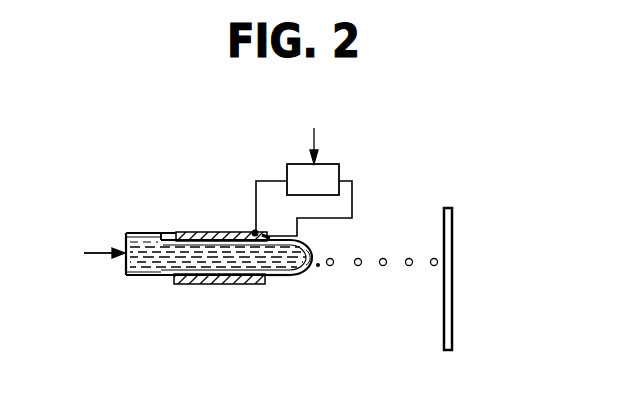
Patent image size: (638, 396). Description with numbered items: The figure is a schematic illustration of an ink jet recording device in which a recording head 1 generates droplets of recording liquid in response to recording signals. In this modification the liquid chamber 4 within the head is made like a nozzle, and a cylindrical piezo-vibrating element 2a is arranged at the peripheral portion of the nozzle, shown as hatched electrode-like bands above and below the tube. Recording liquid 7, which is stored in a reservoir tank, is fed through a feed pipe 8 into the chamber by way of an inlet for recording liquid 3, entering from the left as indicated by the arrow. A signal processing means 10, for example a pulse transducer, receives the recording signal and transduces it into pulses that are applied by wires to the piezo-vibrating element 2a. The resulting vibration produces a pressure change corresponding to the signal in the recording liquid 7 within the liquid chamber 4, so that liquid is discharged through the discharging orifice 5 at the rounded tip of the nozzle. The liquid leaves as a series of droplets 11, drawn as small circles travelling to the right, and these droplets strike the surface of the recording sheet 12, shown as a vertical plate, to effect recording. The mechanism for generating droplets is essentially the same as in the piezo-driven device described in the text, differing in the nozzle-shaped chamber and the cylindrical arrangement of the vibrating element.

The recording head 1 is at (213, 222).
The piezo-vibrating element 2a is at (212, 285).
The inlet for recording liquid 3 is at (176, 232).
The liquid chamber 4 is at (282, 277).
The discharging orifice 5 is at (318, 265).
The recording liquid 7 is at (139, 248).
The feed pipe 8 is at (145, 277).
The signal processing means 10 is at (339, 171).
The droplet 11 is at (383, 258).
The recording sheet 12 is at (452, 270).